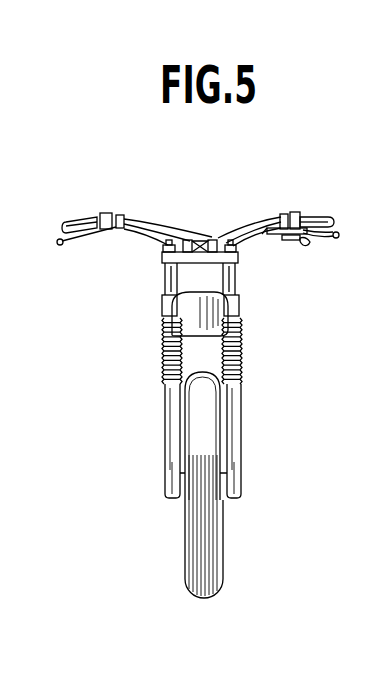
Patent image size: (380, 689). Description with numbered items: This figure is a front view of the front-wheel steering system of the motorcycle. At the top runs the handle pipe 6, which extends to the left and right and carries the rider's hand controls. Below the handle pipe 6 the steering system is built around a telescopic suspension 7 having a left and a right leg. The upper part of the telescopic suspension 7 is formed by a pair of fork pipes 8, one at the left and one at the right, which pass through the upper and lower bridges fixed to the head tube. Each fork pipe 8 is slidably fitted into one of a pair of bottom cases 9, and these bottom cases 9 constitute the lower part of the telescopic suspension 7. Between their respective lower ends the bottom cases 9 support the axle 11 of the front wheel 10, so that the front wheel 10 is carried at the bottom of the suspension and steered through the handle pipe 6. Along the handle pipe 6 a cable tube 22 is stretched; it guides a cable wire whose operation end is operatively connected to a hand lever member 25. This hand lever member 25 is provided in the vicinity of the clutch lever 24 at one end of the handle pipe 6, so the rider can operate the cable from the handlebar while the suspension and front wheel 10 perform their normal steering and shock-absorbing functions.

The handle pipe 6 is at (142, 220).
The telescopic suspension 7 is at (165, 352).
The fork pipes 8 is at (168, 278).
The bottom cases 9 is at (172, 405).
The front wheel 10 is at (223, 550).
The axle 11 is at (232, 483).
The cable tube 22 is at (262, 232).
The clutch lever 24 is at (340, 231).
The hand lever member 25 is at (309, 244).